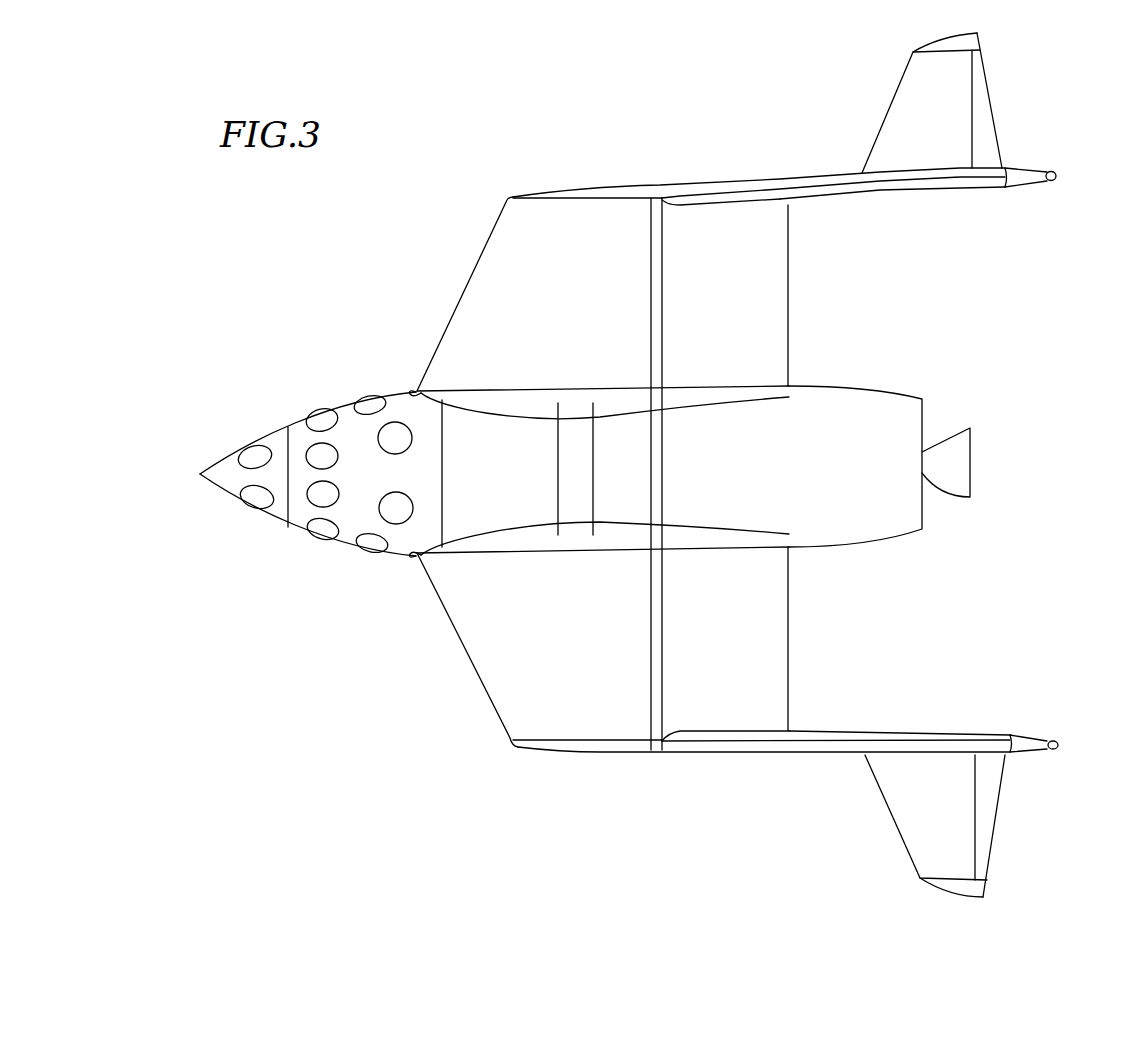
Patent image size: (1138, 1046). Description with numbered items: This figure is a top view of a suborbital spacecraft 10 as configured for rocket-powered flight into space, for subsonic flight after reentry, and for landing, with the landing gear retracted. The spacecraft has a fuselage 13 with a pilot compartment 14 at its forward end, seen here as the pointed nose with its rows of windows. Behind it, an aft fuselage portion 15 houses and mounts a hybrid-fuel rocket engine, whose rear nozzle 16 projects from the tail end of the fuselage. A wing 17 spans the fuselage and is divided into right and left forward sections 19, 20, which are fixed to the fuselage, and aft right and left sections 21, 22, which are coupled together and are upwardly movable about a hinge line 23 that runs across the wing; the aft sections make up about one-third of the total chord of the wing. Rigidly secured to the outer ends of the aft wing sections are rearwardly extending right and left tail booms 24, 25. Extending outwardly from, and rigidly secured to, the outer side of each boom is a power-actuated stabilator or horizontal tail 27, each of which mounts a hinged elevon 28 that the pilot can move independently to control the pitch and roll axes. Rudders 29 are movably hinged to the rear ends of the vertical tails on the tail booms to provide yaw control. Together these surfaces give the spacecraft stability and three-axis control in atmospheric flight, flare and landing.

The suborbital spacecraft 10 is at (348, 338).
The fuselage 13 is at (857, 388).
The pilot compartment 14 is at (350, 432).
The aft fuselage portion 15 is at (779, 480).
The rear nozzle 16 is at (972, 443).
The wing 17 is at (472, 665).
The right forward wing section 19 is at (578, 305).
The left forward wing section 20 is at (579, 640).
The aft right wing section 21 is at (738, 278).
The aft left wing section 22 is at (741, 660).
The hinge line 23 is at (662, 331).
The right tail boom 24 is at (805, 175).
The left tail boom 25 is at (773, 753).
The stabilator 27 is at (918, 95).
The elevon 28 is at (983, 120).
The rudder 29 is at (1037, 183).